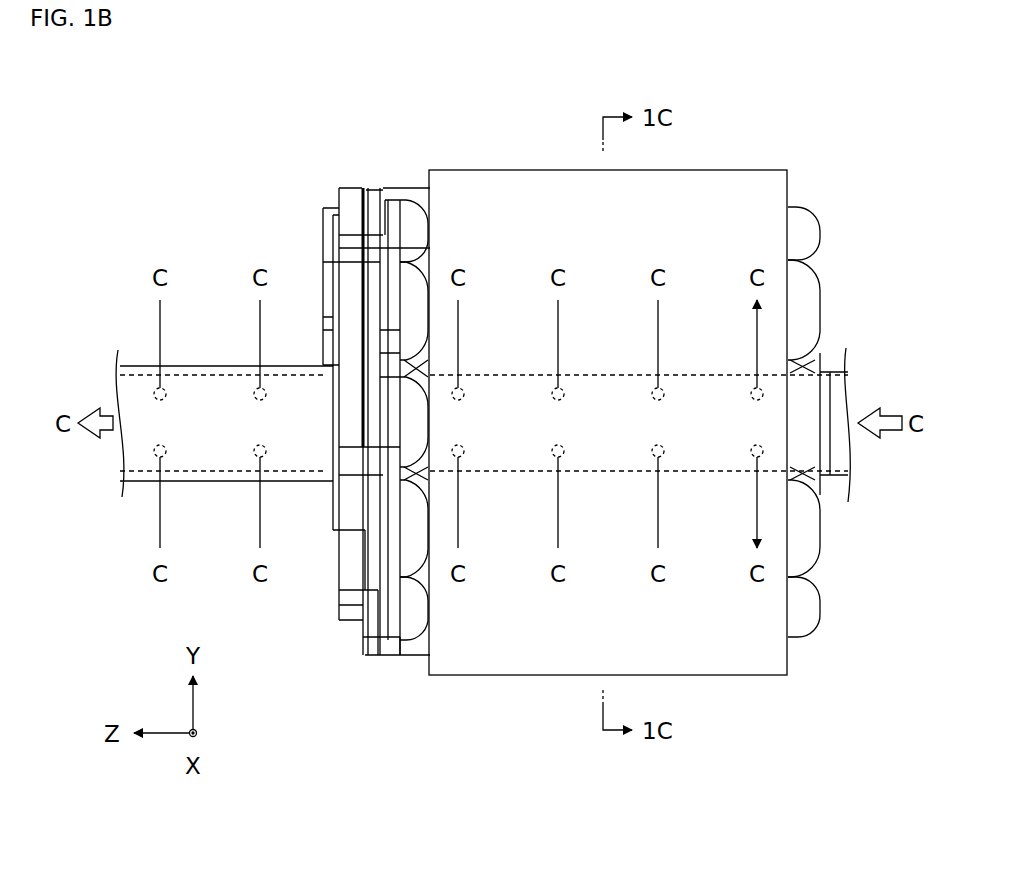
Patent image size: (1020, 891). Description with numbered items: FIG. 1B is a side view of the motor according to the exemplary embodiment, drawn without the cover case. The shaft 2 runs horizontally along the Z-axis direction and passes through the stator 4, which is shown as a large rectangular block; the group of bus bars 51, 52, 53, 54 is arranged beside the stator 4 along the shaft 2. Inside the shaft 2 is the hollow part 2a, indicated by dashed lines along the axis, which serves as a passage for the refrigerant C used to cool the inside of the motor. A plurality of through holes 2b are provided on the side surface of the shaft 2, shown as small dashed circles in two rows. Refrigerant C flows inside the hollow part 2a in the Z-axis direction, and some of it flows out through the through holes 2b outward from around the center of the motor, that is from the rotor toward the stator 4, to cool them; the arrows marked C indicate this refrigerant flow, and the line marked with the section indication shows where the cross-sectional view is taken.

The shaft 2 is at (482, 431).
The hollow part 2a is at (208, 390).
The through holes 2b is at (258, 458).
The stator 4 is at (457, 186).
The bus bar 51 is at (323, 182).
The bus bar 52 is at (384, 421).
The bus bar 53 is at (405, 421).
The bus bar 54 is at (381, 592).